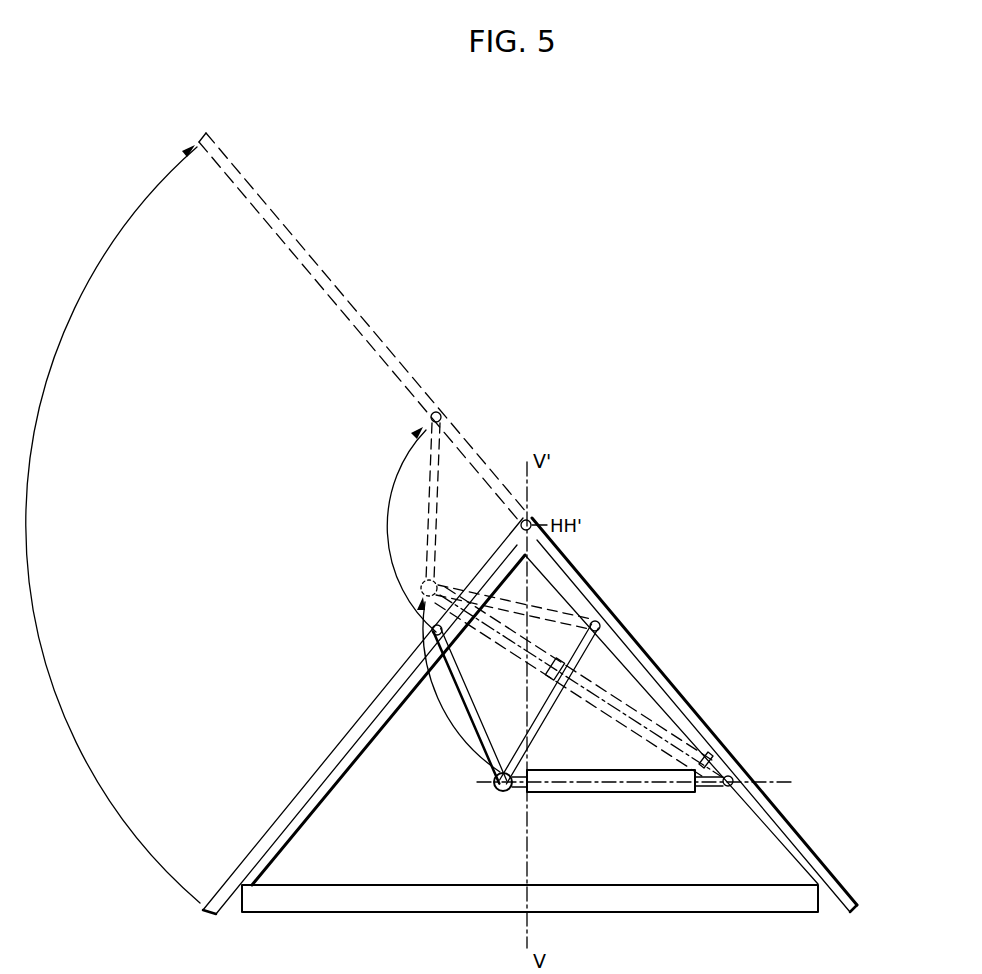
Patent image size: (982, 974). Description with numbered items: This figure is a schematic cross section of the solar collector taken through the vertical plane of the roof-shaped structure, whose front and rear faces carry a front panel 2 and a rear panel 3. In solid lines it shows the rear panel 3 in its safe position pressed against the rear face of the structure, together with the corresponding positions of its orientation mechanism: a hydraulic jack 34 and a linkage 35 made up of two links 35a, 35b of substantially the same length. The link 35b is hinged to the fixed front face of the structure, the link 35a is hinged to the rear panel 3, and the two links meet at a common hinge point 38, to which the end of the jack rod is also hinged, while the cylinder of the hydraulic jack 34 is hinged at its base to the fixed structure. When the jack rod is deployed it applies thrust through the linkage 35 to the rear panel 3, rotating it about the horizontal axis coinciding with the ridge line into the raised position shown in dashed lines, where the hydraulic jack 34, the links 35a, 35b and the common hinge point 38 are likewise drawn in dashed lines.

The front panel 2 is at (792, 810).
The rear panel 3 is at (399, 350).
The hydraulic jack 34 is at (645, 708).
The linkage 35 is at (520, 601).
The link 35a is at (432, 505).
The link 35b is at (553, 600).
The common hinge point 38 is at (420, 591).